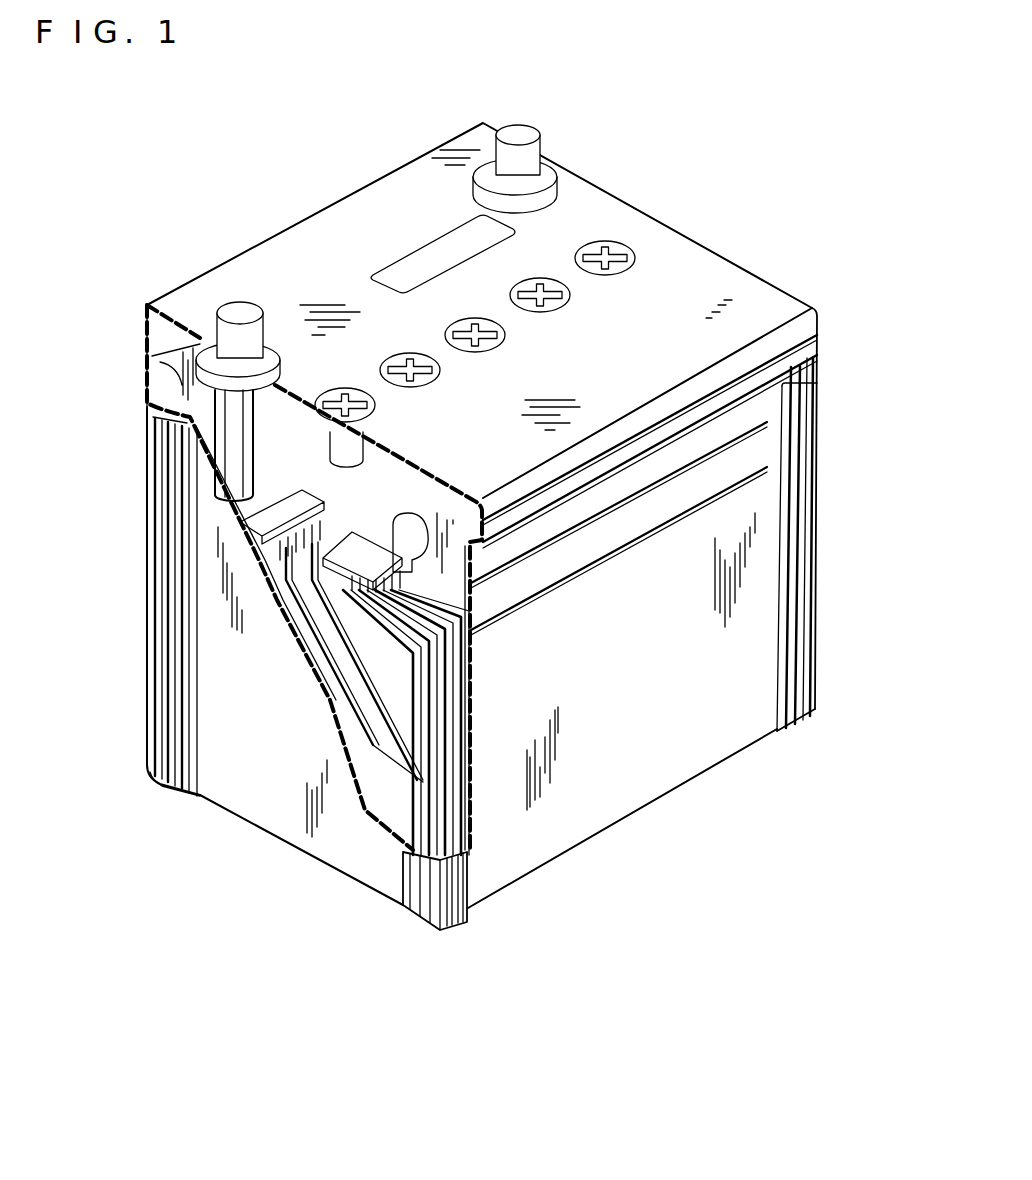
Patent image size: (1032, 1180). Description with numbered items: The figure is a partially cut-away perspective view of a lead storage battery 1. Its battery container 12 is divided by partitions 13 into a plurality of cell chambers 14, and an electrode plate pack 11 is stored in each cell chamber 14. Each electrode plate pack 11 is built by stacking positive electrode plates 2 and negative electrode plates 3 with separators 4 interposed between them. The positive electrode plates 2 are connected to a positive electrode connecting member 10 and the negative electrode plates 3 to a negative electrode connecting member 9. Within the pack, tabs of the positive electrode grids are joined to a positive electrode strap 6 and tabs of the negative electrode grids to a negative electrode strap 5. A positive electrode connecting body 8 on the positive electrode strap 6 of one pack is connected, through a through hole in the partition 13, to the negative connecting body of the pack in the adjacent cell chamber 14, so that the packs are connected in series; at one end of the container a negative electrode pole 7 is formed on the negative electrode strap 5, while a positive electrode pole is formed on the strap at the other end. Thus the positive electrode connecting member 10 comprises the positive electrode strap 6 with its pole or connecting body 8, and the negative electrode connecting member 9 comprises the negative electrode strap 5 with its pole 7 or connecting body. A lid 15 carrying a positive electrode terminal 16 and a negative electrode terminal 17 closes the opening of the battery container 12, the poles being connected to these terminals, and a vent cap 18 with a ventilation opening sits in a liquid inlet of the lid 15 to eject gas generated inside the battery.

The lead storage battery 1 is at (375, 138).
The positive electrode plate 2 is at (345, 765).
The negative electrode plate 3 is at (372, 745).
The separator 4 is at (410, 827).
The negative electrode strap 5 is at (250, 514).
The positive electrode strap 6 is at (365, 530).
The negative electrode pole 7 is at (240, 451).
The positive electrode connecting body 8 is at (412, 532).
The negative electrode connecting member 9 is at (186, 475).
The positive electrode connecting member 10 is at (437, 431).
The electrode plate pack 11 is at (347, 778).
The battery container 12 is at (214, 792).
The partition 13 is at (398, 451).
The cell chamber 14 is at (150, 357).
The lid 15 is at (712, 270).
The positive electrode terminal 16 is at (521, 132).
The negative electrode terminal 17 is at (240, 310).
The vent cap 18 is at (343, 392).